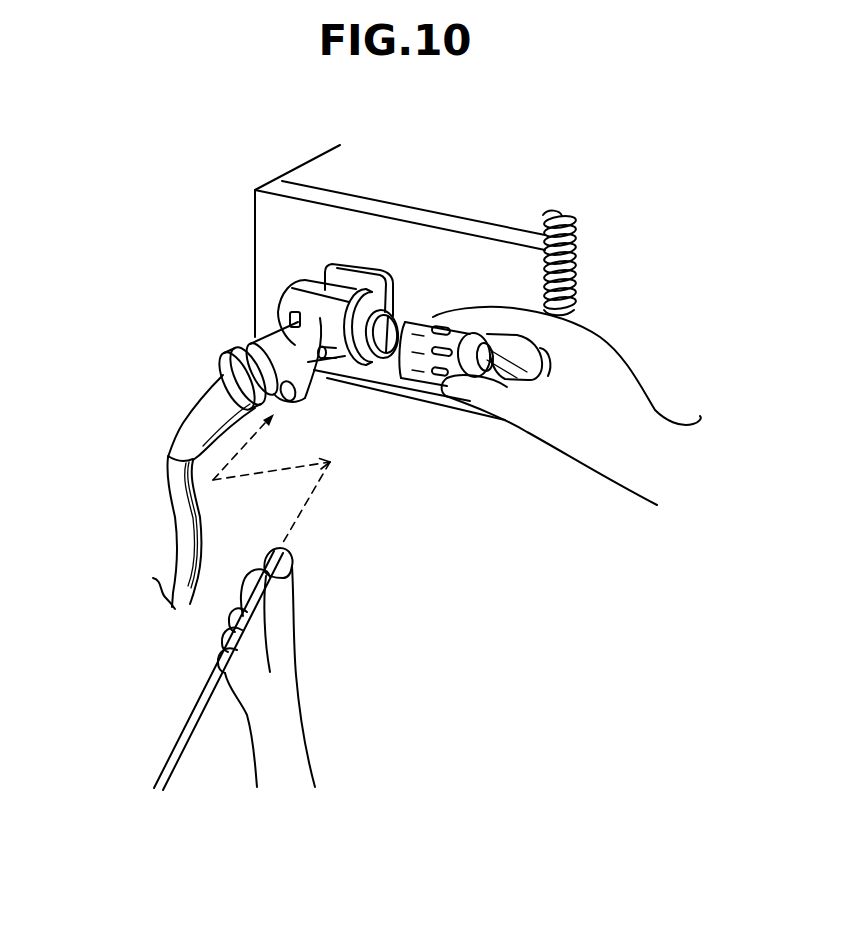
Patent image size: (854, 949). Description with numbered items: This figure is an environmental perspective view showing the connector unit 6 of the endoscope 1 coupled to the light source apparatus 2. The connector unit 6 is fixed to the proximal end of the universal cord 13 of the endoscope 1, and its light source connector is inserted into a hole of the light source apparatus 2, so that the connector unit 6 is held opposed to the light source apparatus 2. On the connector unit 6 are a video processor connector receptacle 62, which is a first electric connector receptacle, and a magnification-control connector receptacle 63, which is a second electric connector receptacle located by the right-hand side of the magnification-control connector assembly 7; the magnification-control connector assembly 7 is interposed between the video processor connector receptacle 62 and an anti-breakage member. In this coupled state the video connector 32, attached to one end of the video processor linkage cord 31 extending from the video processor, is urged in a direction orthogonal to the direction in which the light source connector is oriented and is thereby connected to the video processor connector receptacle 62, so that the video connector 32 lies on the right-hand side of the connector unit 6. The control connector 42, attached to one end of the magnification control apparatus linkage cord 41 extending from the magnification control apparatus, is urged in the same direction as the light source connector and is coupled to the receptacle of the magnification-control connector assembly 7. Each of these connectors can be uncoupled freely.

The endoscope 1 is at (159, 378).
The light source apparatus 2 is at (330, 168).
The connector unit 6 is at (326, 304).
The magnification-control connector assembly 7 is at (252, 341).
The universal cord 13 is at (190, 526).
The video processor linkage cord 31 is at (507, 387).
The video connector 32 is at (431, 322).
The magnification control apparatus linkage cord 41 is at (188, 732).
The control connector 42 is at (292, 568).
The video processor connector receptacle 62 is at (370, 372).
The magnification-control connector receptacle 63 is at (293, 402).